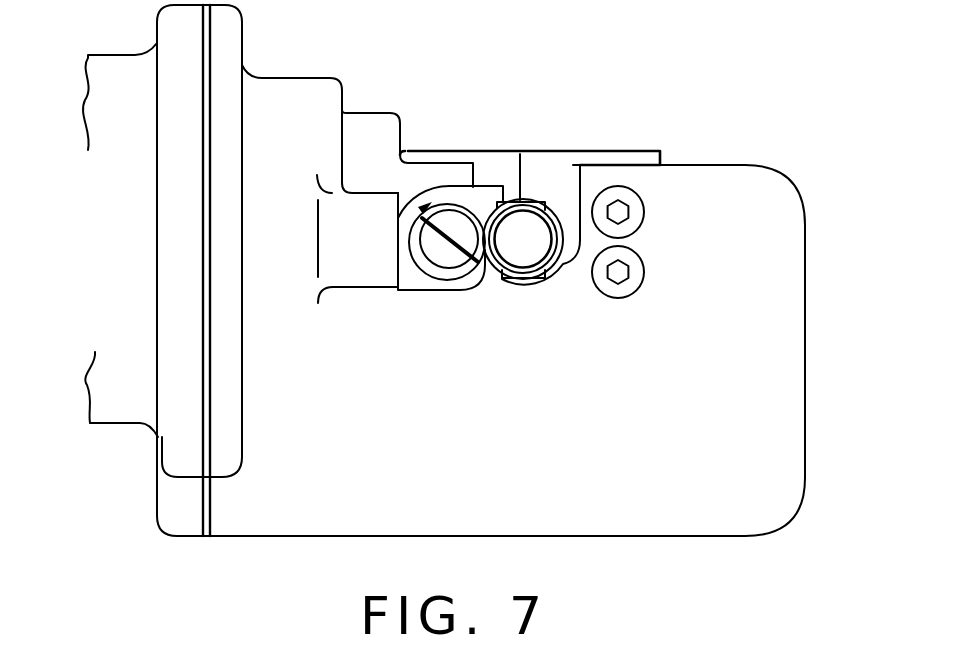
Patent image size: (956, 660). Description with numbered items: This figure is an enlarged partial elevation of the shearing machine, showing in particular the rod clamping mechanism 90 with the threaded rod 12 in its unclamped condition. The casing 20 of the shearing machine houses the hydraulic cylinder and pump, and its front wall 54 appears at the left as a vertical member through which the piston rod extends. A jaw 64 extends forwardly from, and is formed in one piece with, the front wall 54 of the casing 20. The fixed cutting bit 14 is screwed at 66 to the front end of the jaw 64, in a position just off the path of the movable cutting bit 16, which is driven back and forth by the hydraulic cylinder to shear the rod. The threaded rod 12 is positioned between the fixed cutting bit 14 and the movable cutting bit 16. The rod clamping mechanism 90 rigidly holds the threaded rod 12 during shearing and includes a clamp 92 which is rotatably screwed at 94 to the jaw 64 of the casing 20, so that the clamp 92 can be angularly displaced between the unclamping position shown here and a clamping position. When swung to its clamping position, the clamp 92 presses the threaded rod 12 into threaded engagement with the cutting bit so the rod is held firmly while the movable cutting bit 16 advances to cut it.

The threaded rod 12 is at (527, 257).
The fixed cutting bit 14 is at (573, 165).
The movable cutting bit 16 is at (480, 157).
The casing 20 is at (112, 72).
The front wall 54 is at (293, 90).
The jaw 64 is at (777, 200).
The screw fastening of fixed cutting bit 66 is at (620, 212).
The rod clamping mechanism 90 is at (373, 303).
The clamp 92 is at (428, 287).
The screw 94 is at (458, 248).